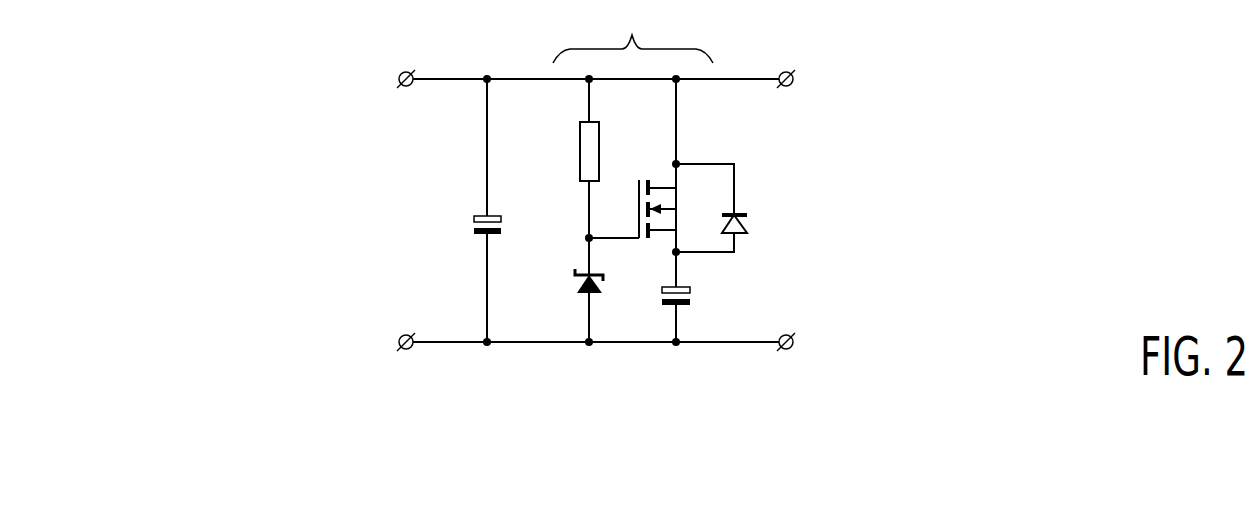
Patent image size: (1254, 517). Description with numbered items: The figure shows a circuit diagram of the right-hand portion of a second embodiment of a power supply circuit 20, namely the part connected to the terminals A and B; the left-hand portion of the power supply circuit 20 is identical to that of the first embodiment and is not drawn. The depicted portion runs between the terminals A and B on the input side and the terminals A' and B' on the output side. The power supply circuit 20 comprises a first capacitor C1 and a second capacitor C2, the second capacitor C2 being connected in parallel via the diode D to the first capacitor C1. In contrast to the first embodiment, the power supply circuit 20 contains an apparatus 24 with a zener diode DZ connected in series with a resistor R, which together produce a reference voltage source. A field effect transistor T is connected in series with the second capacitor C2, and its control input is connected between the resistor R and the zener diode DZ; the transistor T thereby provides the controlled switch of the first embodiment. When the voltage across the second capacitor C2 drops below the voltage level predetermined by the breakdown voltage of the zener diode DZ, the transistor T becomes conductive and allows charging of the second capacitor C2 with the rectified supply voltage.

The power supply circuit 20 is at (334, 130).
The apparatus 24 is at (633, 35).
The terminal A is at (418, 63).
The terminal A' is at (800, 62).
The terminal B is at (418, 359).
The terminal B' is at (800, 358).
The first capacitor C1 is at (471, 210).
The second capacitor C2 is at (693, 312).
The resistor R is at (577, 177).
The field effect transistor T is at (632, 183).
The diode D is at (724, 208).
The zener diode DZ is at (573, 305).